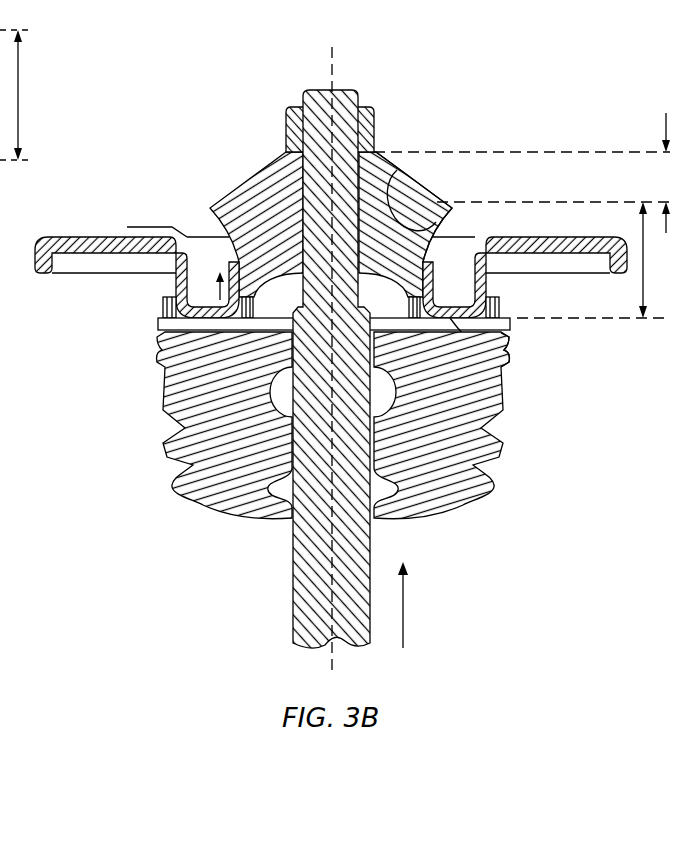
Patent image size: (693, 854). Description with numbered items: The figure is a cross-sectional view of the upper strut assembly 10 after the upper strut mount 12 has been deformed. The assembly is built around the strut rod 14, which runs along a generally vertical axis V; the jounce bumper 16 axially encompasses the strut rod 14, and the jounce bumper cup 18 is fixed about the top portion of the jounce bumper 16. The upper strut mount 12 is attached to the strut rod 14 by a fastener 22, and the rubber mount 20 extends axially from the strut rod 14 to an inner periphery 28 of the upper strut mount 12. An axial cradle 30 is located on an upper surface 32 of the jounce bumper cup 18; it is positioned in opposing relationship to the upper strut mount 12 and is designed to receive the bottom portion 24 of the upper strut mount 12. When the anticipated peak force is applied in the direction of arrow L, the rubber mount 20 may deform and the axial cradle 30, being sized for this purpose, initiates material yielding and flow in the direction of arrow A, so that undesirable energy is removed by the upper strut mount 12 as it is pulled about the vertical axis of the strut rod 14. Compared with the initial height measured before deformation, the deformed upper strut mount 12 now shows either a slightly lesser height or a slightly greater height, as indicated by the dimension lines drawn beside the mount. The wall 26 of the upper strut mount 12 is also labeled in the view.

The upper strut assembly 10 is at (258, 70).
The upper strut mount 12 is at (50, 237).
The strut rod 14 is at (313, 577).
The jounce bumper 16 is at (208, 390).
The jounce bumper cup 18 is at (163, 323).
The rubber mount 20 is at (258, 197).
The fastener 22 is at (363, 103).
The bottom portion 24 is at (503, 350).
The outer wall of upper body 26 is at (437, 203).
The inner periphery 28 is at (395, 172).
The axial cradle 30 is at (163, 305).
The upper surface 32 is at (160, 312).